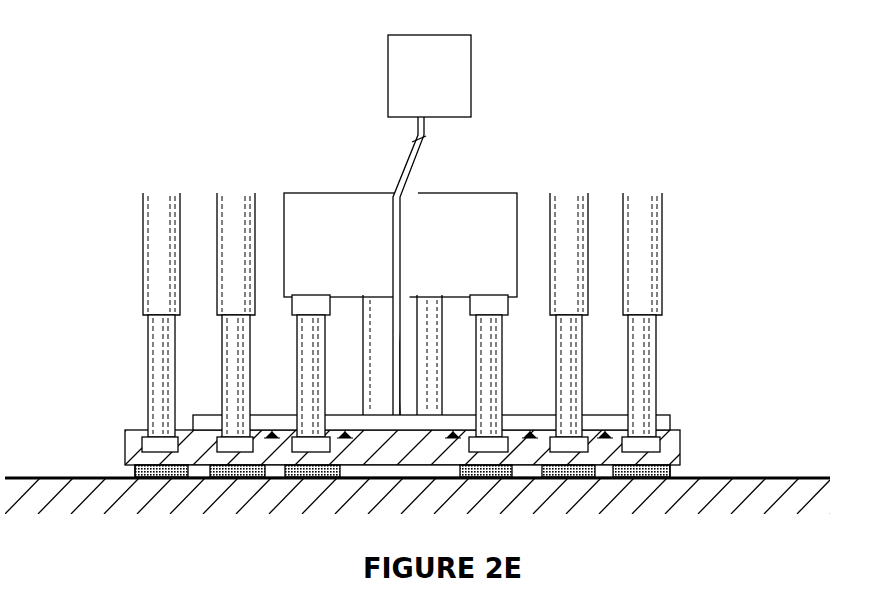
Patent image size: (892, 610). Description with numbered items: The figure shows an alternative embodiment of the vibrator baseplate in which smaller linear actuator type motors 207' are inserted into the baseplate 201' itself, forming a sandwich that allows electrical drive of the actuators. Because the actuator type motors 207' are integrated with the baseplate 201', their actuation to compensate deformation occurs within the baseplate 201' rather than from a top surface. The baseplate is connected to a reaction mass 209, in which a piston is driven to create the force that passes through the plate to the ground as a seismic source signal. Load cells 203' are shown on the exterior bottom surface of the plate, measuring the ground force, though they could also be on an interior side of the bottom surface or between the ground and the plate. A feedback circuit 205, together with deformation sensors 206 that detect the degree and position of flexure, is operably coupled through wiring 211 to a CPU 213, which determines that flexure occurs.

The baseplate 201' is at (437, 426).
The load cells 203' is at (466, 456).
The feedback circuit 205 is at (210, 414).
The deformation sensors 206 is at (186, 430).
The linear actuator type motors 207' is at (456, 322).
The reaction mass 209 is at (507, 217).
The wiring 211 is at (393, 185).
The CPU 213 is at (411, 109).